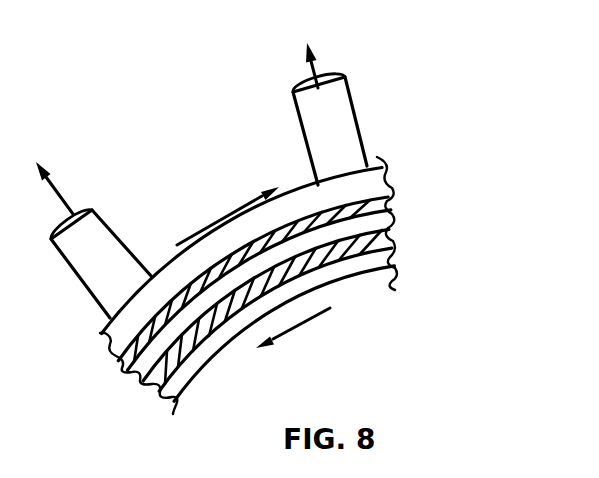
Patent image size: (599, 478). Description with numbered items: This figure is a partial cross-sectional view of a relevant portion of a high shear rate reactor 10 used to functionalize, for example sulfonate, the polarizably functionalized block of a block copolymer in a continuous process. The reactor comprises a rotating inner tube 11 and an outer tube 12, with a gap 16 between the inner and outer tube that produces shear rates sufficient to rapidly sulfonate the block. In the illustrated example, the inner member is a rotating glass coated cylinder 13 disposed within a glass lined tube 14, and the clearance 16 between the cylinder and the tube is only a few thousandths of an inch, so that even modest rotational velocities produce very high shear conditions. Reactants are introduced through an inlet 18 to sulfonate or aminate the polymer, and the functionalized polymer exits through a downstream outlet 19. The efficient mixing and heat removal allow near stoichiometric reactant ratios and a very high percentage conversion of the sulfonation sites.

The high shear rate reactor 10 is at (469, 171).
The inner tube 11 is at (363, 262).
The outer tube 12 is at (362, 185).
The glass coated cylinder 13 is at (155, 380).
The glass lined tube 14 is at (127, 361).
The gap 16 is at (377, 222).
The inlet 18 is at (337, 125).
The outlet 19 is at (103, 266).